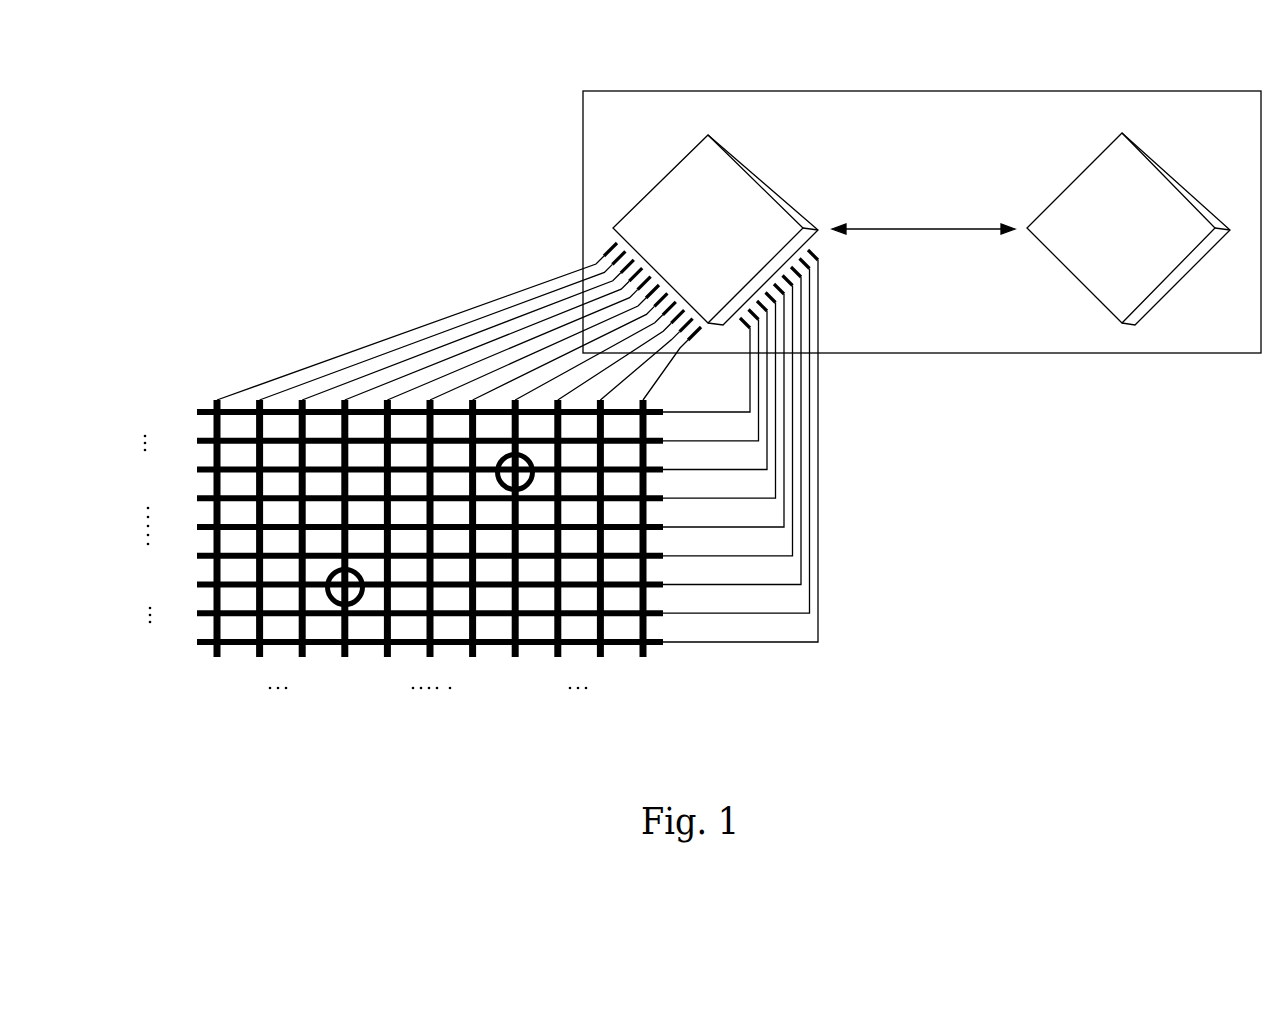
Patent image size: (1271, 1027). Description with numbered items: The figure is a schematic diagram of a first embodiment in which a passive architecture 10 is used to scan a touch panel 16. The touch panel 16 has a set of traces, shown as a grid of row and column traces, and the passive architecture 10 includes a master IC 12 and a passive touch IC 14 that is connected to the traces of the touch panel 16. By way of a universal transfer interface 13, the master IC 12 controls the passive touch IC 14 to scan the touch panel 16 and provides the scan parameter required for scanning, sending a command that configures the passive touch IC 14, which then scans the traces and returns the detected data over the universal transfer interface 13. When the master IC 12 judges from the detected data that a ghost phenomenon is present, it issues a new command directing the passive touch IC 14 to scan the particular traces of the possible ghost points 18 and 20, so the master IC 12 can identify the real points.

The passive architecture 10 is at (922, 90).
The master IC 12 is at (1075, 180).
The universal transfer interface 13 is at (920, 232).
The passive touch IC 14 is at (663, 178).
The touch panel 16 is at (195, 380).
The possible ghost point 18 is at (330, 603).
The possible ghost point 20 is at (502, 490).